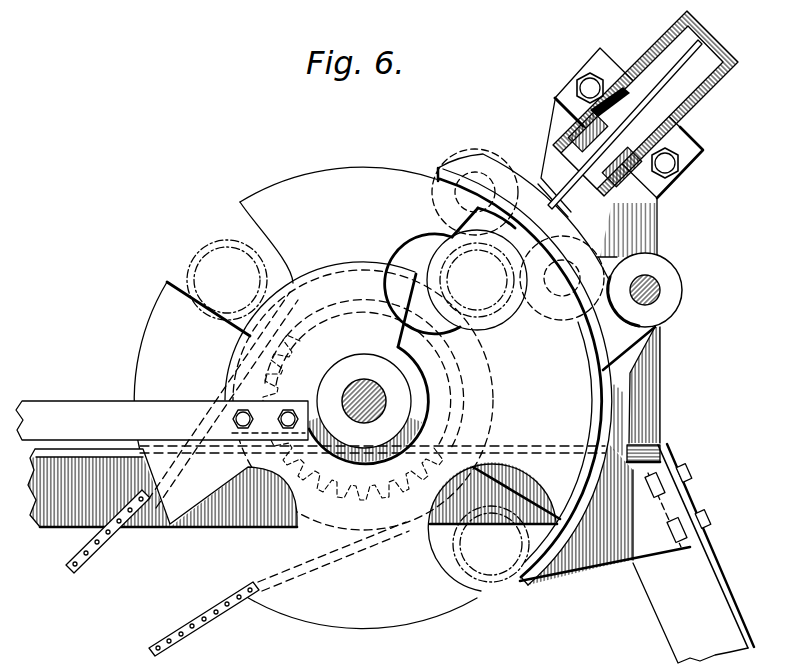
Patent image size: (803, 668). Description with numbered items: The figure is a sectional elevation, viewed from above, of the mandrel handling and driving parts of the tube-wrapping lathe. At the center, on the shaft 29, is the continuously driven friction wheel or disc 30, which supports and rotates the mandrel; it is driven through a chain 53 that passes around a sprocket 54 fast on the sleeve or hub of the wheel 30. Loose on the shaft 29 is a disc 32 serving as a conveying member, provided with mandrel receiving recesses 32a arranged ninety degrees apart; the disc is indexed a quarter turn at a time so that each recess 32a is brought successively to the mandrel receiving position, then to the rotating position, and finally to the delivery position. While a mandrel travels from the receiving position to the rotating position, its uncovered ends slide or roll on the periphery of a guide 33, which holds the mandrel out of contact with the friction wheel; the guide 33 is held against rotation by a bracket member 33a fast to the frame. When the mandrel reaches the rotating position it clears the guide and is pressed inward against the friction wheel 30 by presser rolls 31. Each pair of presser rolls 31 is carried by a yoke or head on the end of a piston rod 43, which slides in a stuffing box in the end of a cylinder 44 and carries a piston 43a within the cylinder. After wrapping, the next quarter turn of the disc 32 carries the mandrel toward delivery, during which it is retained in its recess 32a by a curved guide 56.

The shaft 29 is at (358, 378).
The friction wheel 30 is at (290, 497).
The presser roll 31 is at (468, 160).
The disc 32 is at (339, 225).
The mandrel receiving recess 32a is at (241, 206).
The guide 33 is at (361, 262).
The bracket member 33a is at (97, 388).
The piston rod 43 is at (568, 196).
The piston 43a is at (657, 108).
The cylinder 44 is at (700, 105).
The chain 53 is at (197, 598).
The sprocket 54 is at (353, 425).
The curved guide 56 is at (594, 340).